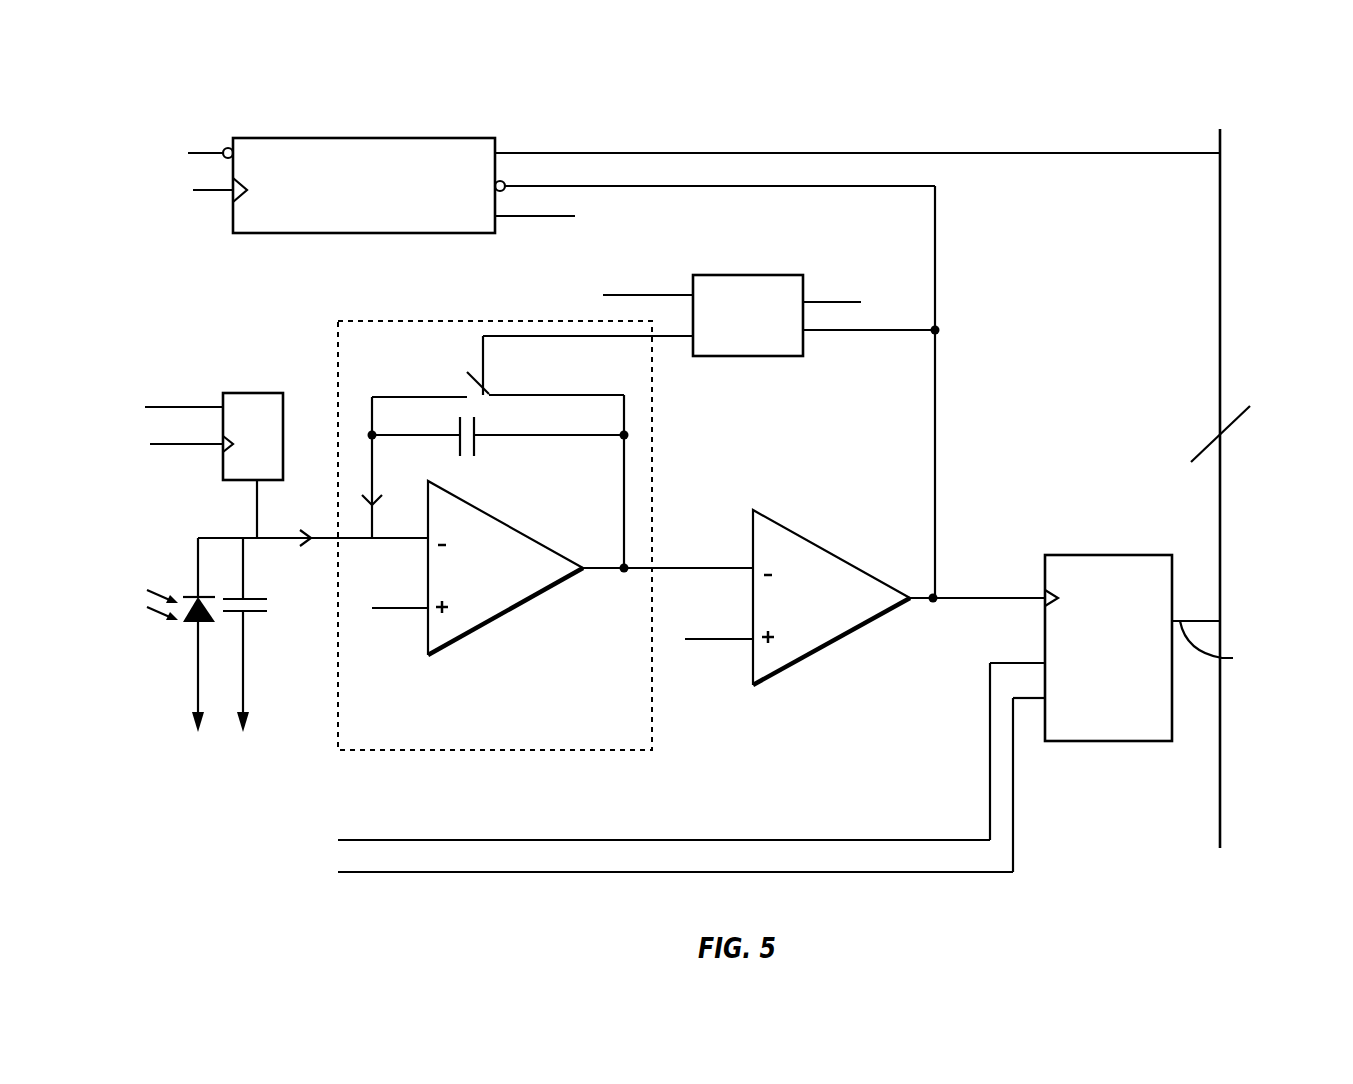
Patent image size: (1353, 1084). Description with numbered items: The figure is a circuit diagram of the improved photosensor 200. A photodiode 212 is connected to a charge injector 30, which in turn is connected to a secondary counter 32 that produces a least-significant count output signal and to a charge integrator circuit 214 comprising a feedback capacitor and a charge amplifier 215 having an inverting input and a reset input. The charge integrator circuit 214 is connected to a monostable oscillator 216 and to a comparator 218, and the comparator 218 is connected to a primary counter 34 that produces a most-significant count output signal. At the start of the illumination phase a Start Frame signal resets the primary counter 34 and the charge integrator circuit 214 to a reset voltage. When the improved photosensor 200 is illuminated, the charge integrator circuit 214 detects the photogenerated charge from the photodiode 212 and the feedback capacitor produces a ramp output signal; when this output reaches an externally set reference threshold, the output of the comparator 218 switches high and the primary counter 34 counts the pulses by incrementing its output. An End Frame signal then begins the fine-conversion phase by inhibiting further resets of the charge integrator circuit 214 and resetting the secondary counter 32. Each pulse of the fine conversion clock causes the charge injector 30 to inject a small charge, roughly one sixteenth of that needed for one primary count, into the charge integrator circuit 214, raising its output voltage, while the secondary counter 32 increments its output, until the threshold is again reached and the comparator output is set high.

The improved photosensor 200 is at (1152, 128).
The secondary counter 32 is at (685, 170).
The monostable oscillator 216 is at (711, 298).
The charge injector 30 is at (199, 448).
The photodiode 212 is at (256, 612).
The charge integrator circuit 214 is at (545, 535).
The charge amplifier 215 is at (505, 568).
The comparator 218 is at (865, 435).
The primary counter 34 is at (811, 703).